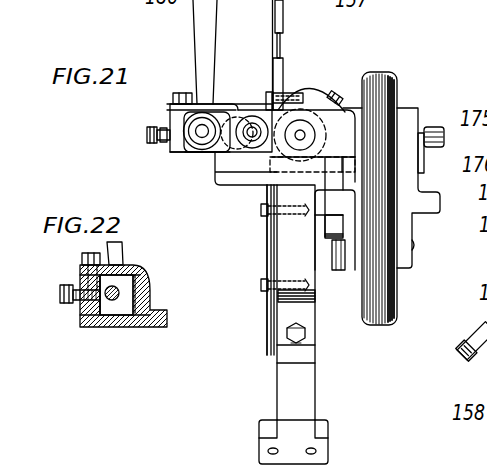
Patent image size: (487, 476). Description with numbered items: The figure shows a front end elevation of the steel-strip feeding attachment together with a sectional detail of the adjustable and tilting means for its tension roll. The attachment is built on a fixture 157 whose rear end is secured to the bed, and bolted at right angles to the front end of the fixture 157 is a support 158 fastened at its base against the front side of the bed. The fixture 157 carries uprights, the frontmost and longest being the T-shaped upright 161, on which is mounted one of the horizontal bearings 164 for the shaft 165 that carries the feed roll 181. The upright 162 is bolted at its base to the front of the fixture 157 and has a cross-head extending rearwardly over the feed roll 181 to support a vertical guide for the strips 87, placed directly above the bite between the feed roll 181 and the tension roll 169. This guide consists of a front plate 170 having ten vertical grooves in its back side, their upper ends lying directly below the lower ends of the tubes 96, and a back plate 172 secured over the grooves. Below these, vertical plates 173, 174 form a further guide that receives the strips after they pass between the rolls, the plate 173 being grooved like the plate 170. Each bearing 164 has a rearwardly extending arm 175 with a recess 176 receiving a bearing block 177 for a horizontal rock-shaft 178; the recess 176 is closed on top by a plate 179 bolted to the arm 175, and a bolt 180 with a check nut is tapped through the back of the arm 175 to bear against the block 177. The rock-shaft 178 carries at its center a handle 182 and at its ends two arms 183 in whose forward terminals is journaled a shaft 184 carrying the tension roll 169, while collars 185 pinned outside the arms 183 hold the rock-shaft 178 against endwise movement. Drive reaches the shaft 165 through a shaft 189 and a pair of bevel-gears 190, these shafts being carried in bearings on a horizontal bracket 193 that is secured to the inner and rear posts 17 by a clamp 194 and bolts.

In FIG. 21, the posts 17 is at (395, 90).
In FIG. 21, the strips 87 is at (279, 68).
In FIG. 21, the tubes 96 is at (283, 14).
In FIG. 21, the fixture 157 is at (303, 313).
In FIG. 21, the support 158 is at (302, 405).
In FIG. 21, the upright 161 is at (288, 302).
In FIG. 21, the upright 162 is at (290, 88).
In FIG. 21, the horizontal bearings 164 is at (313, 135).
In FIG. 21, the shaft 165 is at (300, 150).
In FIG. 21, the tension roll 169 is at (260, 110).
In FIG. 21, the front plate 170 is at (295, 75).
In FIG. 21, the back plate 172 is at (273, 70).
In FIG. 21, the plate 173 is at (275, 235).
In FIG. 21, the plate 174 is at (268, 258).
In FIG. 21, the arm 175 is at (185, 155).
In FIG. 22, the arm 175 is at (90, 322).
In FIG. 22, the recess 176 is at (80, 312).
In FIG. 22, the bearing block 177 is at (123, 305).
In FIG. 21, the rock-shaft 178 is at (202, 127).
In FIG. 22, the rock-shaft 178 is at (120, 292).
In FIG. 21, the plate 179 is at (169, 107).
In FIG. 22, the plate 179 is at (127, 268).
In FIG. 21, the bolt 180 is at (147, 133).
In FIG. 22, the bolt 180 is at (65, 295).
In FIG. 21, the feed roll 181 is at (313, 100).
In FIG. 21, the handle 182 is at (207, 33).
In FIG. 22, the handle 182 is at (113, 248).
In FIG. 21, the arms 183 is at (232, 140).
In FIG. 21, the shaft 184 is at (252, 133).
In FIG. 21, the collars 185 is at (195, 137).
In FIG. 21, the shaft 189 is at (433, 123).
In FIG. 21, the bevel-gears 190 is at (338, 100).
In FIG. 21, the horizontal bracket 193 is at (402, 257).
In FIG. 21, the clamp 194 is at (352, 265).